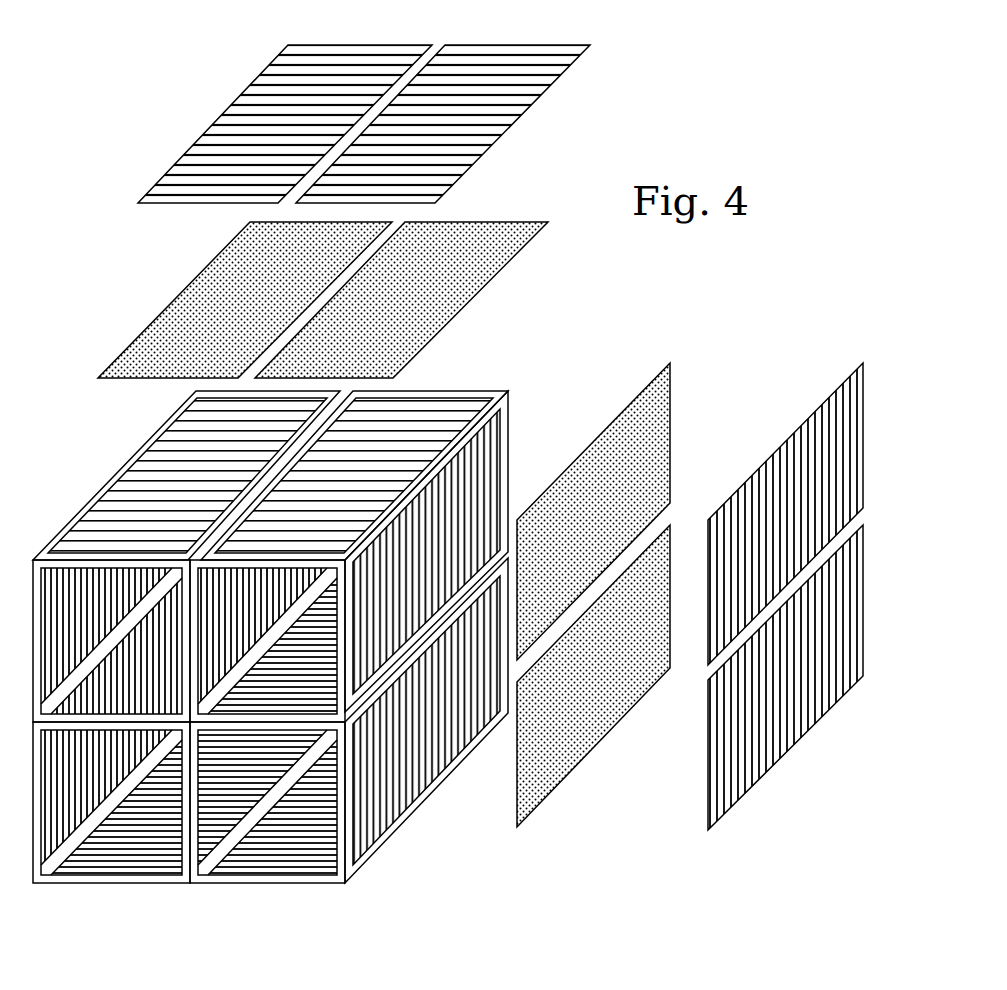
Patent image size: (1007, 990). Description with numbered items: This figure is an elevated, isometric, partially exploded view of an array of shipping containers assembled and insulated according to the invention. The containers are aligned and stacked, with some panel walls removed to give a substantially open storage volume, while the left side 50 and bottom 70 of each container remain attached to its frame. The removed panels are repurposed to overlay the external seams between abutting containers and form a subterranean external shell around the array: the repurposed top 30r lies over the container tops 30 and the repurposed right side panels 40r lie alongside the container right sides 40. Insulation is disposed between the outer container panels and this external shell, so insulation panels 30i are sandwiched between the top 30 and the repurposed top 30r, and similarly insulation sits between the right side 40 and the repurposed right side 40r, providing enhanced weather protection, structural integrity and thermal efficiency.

The top 30 is at (200, 484).
The repurposed top 30r is at (208, 127).
The insulation panel 30i is at (158, 315).
The right side 40 is at (446, 565).
The repurposed right 40r is at (823, 408).
The left side 50 is at (99, 617).
The bottom 70 is at (162, 832).